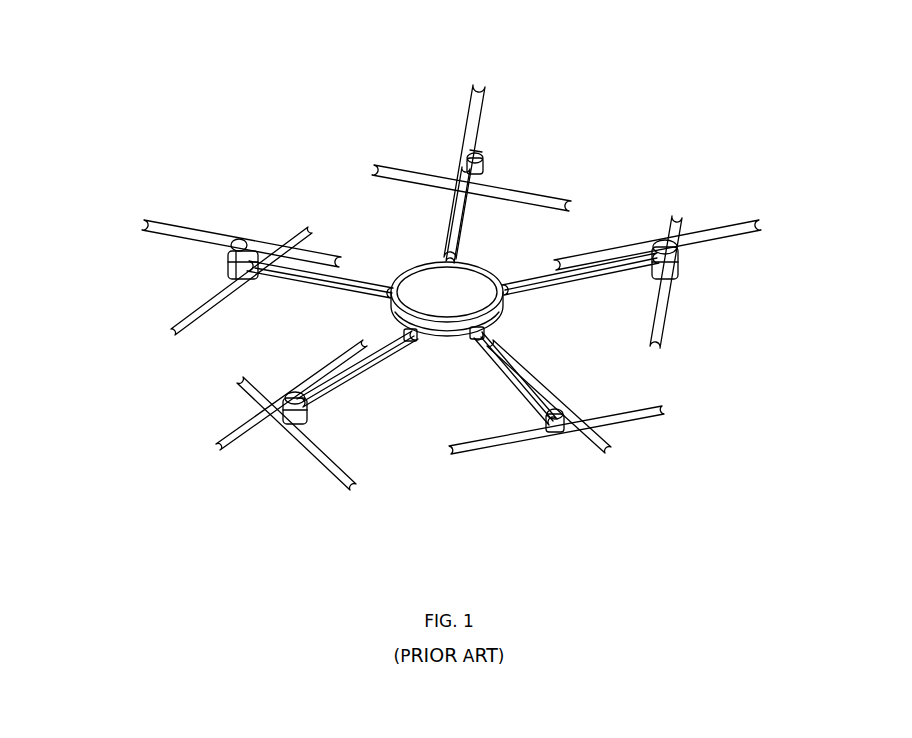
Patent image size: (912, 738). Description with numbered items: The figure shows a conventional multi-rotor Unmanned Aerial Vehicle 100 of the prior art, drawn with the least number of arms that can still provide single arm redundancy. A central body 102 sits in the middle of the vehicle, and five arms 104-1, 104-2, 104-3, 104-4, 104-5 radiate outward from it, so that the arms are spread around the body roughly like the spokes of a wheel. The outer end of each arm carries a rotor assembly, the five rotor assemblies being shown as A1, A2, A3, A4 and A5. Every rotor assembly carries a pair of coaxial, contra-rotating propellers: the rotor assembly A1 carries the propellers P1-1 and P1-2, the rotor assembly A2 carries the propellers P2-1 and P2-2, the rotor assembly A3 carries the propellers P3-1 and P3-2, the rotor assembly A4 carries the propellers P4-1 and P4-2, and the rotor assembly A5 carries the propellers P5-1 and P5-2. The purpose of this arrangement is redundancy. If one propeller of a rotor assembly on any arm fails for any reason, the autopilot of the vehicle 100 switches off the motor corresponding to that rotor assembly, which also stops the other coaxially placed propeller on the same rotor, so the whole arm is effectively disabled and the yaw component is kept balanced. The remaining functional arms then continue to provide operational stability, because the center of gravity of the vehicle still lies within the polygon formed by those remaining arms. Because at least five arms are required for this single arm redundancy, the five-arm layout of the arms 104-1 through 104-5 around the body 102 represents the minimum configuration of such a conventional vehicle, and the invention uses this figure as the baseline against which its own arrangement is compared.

The multi-rotor Unmanned Aerial Vehicle 100 is at (117, 40).
The central body 102 is at (409, 264).
The arm 104-1 is at (288, 290).
The arm 104-2 is at (357, 384).
The arm 104-3 is at (494, 343).
The arm 104-4 is at (532, 279).
The arm 104-5 is at (444, 228).
The rotor assembly A1 is at (233, 263).
The rotor assembly A2 is at (310, 413).
The rotor assembly A3 is at (565, 438).
The rotor assembly A4 is at (683, 263).
The rotor assembly A5 is at (489, 163).
The propeller P1-1 is at (196, 226).
The propeller P1-2 is at (182, 315).
The propeller P2-1 is at (243, 390).
The propeller P2-2 is at (337, 478).
The propeller P3-1 is at (542, 373).
The propeller P3-2 is at (505, 454).
The propeller P4-1 is at (726, 222).
The propeller P4-2 is at (670, 328).
The propeller P5-1 is at (490, 92).
The propeller P5-2 is at (385, 170).